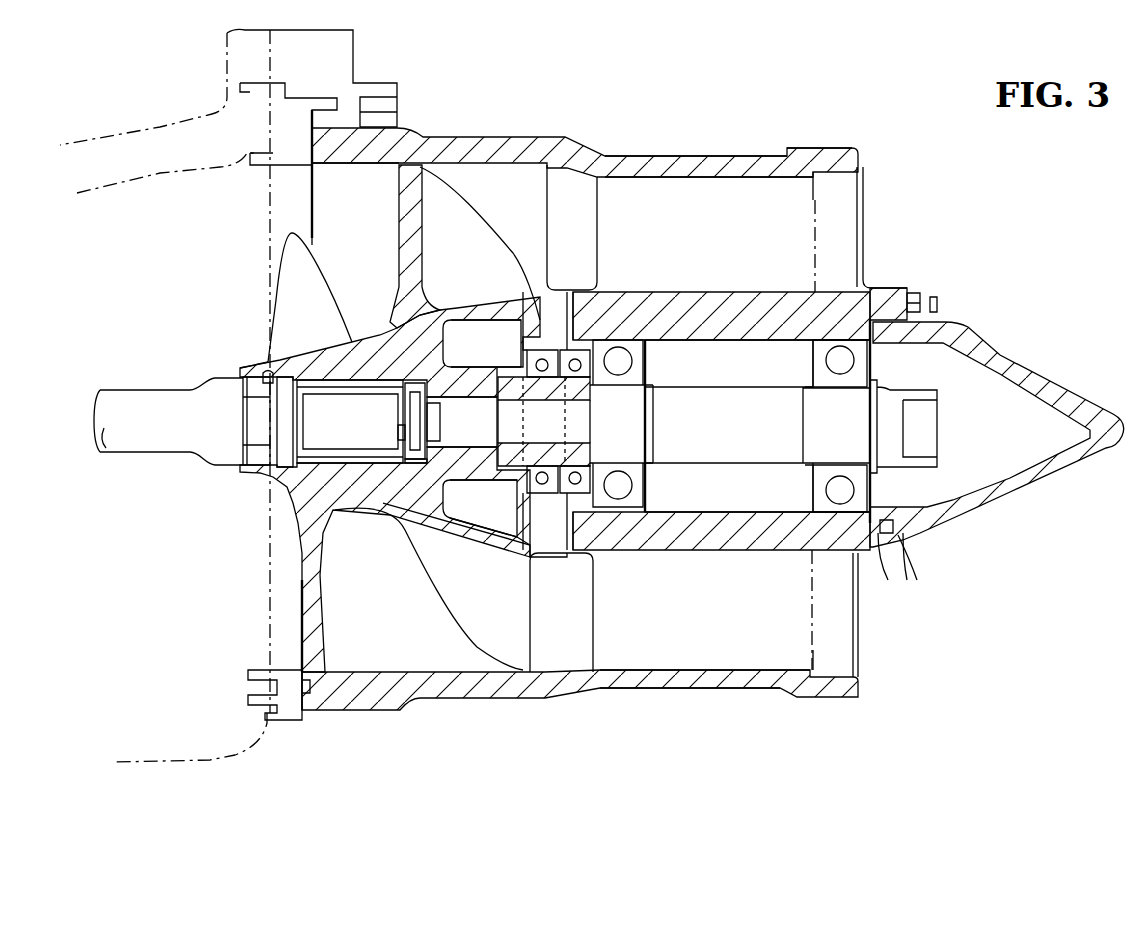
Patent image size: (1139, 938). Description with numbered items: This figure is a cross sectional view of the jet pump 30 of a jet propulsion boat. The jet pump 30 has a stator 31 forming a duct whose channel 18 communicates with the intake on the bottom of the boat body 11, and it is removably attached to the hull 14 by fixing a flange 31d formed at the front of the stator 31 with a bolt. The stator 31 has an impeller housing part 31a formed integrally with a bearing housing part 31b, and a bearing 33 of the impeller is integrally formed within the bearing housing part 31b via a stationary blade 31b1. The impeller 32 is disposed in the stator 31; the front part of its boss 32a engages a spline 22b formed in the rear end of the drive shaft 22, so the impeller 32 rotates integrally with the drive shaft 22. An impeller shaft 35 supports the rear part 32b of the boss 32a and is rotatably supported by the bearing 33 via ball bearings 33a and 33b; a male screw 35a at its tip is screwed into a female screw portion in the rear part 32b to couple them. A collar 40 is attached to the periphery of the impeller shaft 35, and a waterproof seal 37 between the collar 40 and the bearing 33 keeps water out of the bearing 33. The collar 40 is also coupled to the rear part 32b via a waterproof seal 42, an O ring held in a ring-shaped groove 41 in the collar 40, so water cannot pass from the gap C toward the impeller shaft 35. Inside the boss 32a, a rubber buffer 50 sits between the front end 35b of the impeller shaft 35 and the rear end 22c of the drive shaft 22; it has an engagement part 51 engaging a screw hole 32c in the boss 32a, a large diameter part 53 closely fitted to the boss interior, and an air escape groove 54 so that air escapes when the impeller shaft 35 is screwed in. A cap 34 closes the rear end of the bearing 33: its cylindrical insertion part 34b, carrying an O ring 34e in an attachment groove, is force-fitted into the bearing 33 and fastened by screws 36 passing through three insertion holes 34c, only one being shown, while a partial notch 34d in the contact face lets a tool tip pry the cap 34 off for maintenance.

The boat body 11 is at (228, 111).
The hull 14 is at (175, 143).
The channel 18 is at (370, 203).
The drive shaft 22 is at (168, 437).
The spline 22b is at (347, 393).
The rear end of the drive shaft 22c is at (400, 410).
The jet pump 30 is at (665, 128).
The stator 31 is at (577, 697).
The impeller housing part 31a is at (381, 715).
The bearing housing part 31b is at (723, 702).
The stationary blade 31b1 is at (745, 200).
The flange 31d is at (290, 713).
The impeller 32 is at (480, 620).
The boss 32a is at (330, 495).
The rear part of the boss 32b is at (482, 375).
The screw hole 32c is at (430, 415).
The bearing 33 is at (677, 535).
The ball bearing 33a is at (638, 340).
The ball bearing 33b is at (797, 310).
The cap 34 is at (1022, 335).
The insertion part 34b is at (888, 580).
The insertion hole 34c is at (913, 300).
The notch 34d is at (917, 580).
The O ring 34e is at (907, 580).
The impeller shaft 35 is at (707, 417).
The male screw 35a is at (466, 458).
The front end of the impeller shaft 35b is at (442, 503).
The screw 36 is at (935, 293).
The waterproof seal 37 is at (560, 418).
The collar 40 is at (582, 444).
The ring-shaped groove 41 is at (527, 402).
The waterproof seal 42 is at (509, 377).
The buffer 50 is at (410, 468).
The engagement part 51 is at (434, 418).
The large diameter part 53 is at (410, 380).
The air escape groove 54 is at (398, 432).
The gap C is at (500, 483).